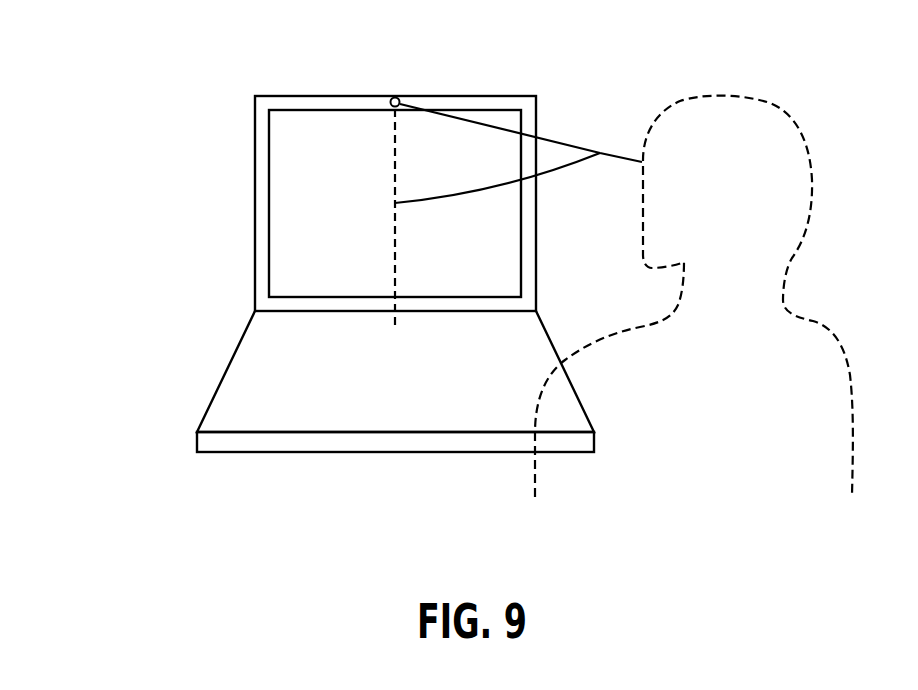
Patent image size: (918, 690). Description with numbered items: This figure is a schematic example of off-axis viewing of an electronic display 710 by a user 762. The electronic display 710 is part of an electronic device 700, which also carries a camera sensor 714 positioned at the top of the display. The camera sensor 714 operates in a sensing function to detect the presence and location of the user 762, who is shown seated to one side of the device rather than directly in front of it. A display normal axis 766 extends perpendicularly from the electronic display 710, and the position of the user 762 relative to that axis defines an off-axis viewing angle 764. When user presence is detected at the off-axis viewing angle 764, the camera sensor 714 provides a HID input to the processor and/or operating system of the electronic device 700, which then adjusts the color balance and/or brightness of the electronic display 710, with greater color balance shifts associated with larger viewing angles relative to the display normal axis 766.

The electronic device 700 is at (560, 88).
The electronic display 710 is at (295, 265).
The camera sensor 714 is at (420, 42).
The user 762 is at (768, 194).
The off-axis viewing angle 764 is at (433, 200).
The display normal axis 766 is at (392, 240).